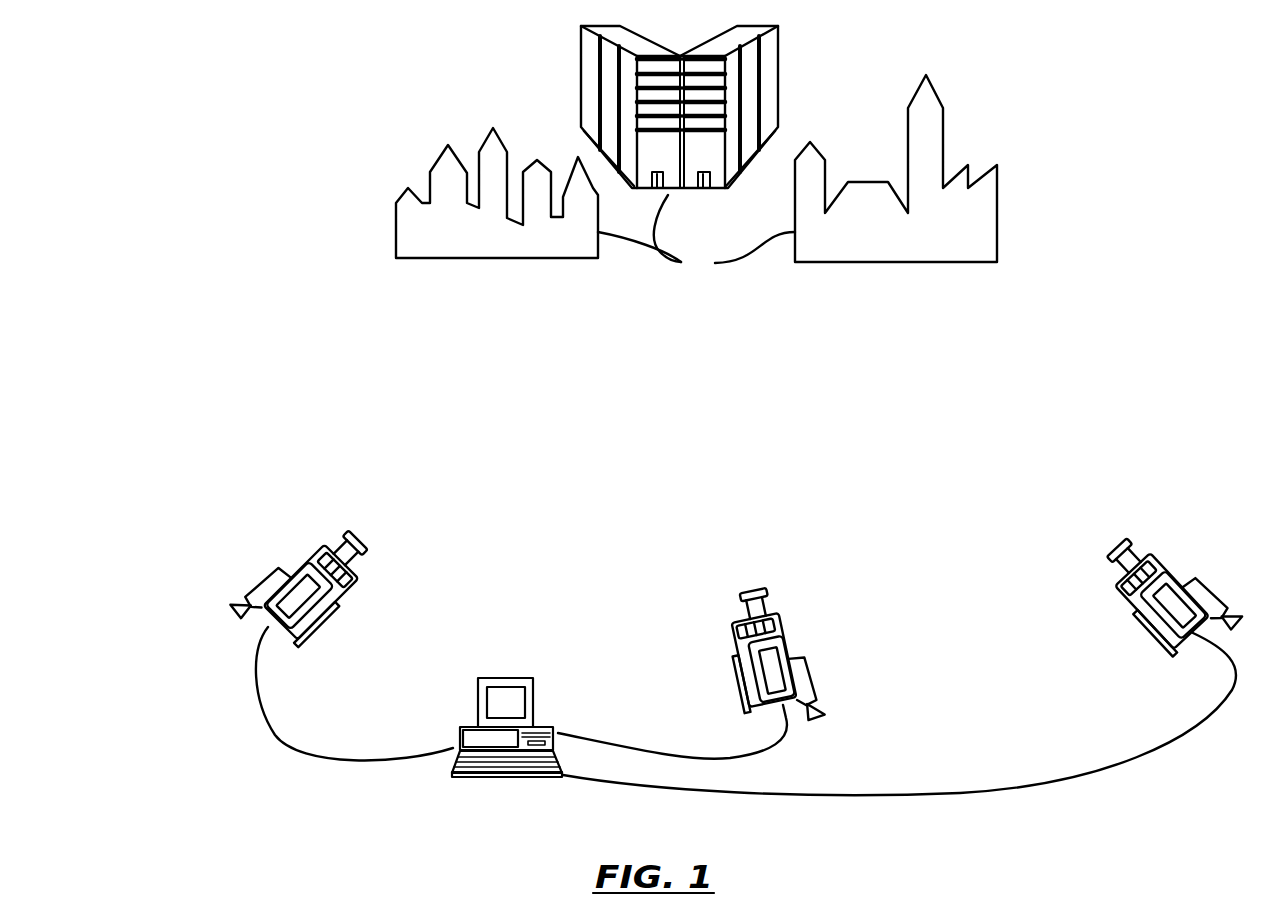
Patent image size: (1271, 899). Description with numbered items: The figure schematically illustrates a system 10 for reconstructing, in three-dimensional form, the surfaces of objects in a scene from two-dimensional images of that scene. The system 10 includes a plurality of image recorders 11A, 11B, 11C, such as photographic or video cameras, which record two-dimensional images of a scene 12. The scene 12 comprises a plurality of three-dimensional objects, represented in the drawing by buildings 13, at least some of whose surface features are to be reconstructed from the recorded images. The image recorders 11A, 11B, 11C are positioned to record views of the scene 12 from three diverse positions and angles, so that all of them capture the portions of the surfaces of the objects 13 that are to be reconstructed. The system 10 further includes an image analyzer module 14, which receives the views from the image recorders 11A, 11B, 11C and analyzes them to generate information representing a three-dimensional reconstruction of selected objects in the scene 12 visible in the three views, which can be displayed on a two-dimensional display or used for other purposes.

The system 10 is at (325, 447).
The image recorder 11A is at (733, 626).
The image recorder 11B is at (332, 545).
The image recorder 11C is at (1153, 557).
The scene 12 is at (447, 91).
The buildings 13 is at (696, 235).
The image analyzer module 14 is at (501, 782).